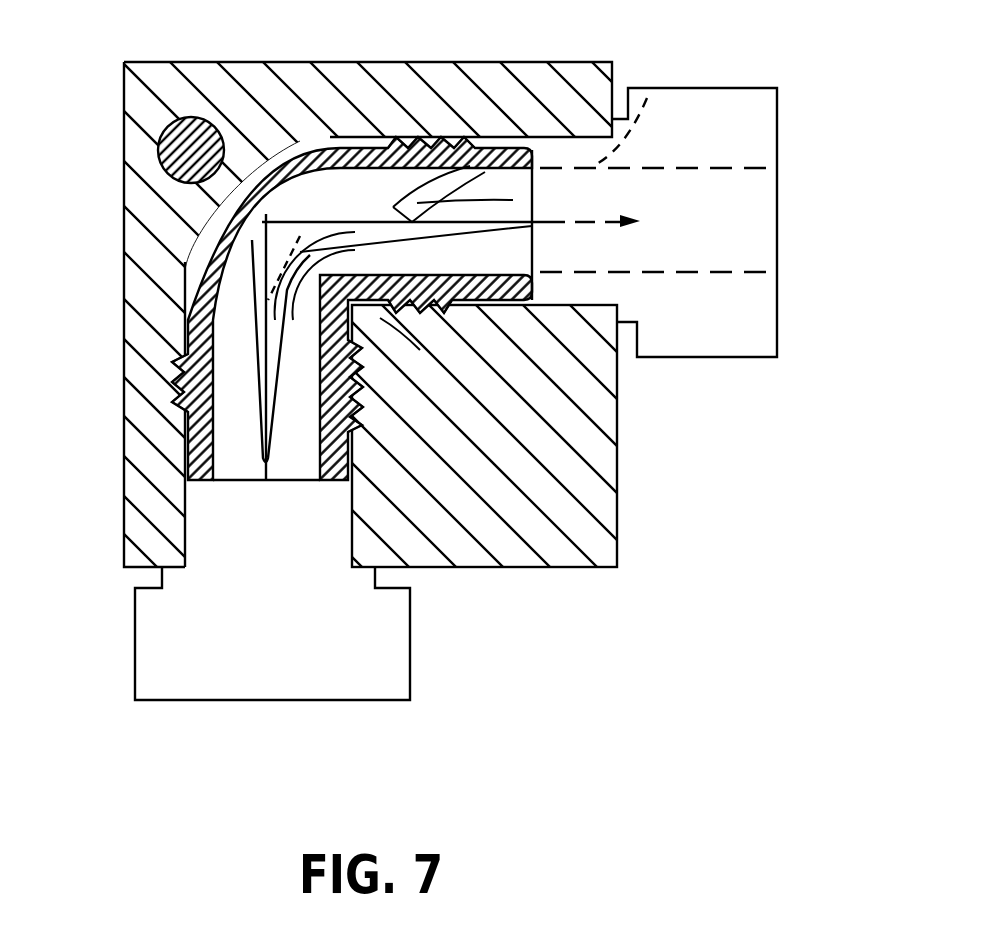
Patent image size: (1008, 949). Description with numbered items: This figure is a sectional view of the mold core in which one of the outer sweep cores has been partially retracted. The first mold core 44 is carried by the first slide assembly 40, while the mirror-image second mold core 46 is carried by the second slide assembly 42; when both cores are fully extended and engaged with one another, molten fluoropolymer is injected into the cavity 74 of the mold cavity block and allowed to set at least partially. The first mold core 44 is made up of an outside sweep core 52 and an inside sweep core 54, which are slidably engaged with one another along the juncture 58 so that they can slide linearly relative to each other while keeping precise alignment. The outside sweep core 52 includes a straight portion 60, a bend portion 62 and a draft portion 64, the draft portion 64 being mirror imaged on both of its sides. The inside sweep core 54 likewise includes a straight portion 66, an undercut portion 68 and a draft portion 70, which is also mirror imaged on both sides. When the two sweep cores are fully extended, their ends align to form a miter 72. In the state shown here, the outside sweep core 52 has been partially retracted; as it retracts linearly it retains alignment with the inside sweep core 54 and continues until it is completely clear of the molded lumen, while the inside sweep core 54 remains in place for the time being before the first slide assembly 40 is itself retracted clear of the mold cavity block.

The first slide assembly 40 is at (784, 131).
The second slide assembly 42 is at (420, 676).
The first mold core 44 is at (505, 253).
The second mold core 46 is at (237, 445).
The outside sweep core 52 is at (205, 334).
The inside sweep core 54 is at (235, 404).
The juncture 58 is at (267, 297).
The straight portion 60 is at (647, 98).
The bend portion 62 is at (400, 190).
The draft portion 64 is at (465, 213).
The straight portion 66 is at (425, 307).
The undercut portion 68 is at (420, 350).
The draft portion 70 is at (266, 214).
The miter 72 is at (300, 234).
The cavity 74 is at (222, 196).